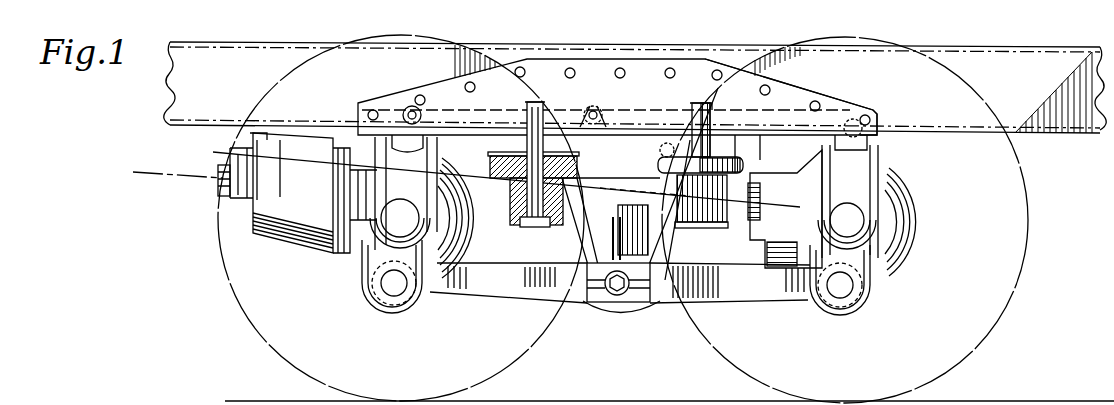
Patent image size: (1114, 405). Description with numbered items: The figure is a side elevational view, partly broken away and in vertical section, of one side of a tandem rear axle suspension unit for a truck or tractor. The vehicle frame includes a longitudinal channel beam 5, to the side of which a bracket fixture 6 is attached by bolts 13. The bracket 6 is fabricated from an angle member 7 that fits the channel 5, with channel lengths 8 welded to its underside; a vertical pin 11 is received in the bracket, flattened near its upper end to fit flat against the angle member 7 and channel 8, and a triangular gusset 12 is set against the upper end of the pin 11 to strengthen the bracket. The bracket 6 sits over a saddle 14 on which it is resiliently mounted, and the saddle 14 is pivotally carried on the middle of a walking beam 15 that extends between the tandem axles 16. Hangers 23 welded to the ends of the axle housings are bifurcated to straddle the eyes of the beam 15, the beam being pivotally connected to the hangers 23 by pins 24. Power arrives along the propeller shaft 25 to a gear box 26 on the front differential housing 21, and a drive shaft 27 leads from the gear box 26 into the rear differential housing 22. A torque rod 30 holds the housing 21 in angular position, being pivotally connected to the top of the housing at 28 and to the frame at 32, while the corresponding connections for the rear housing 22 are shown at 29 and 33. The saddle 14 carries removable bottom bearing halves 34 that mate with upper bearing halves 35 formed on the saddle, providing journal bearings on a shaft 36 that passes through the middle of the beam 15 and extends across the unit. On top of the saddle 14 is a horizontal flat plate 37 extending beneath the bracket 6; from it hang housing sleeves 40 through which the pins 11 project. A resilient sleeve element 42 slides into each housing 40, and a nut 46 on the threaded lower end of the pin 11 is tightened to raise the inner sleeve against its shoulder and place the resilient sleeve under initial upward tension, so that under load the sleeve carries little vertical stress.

The longitudinal channel beam 5 is at (1068, 50).
The bracket fixture 6 is at (641, 58).
The angle member 7 is at (806, 93).
The channel length 8 is at (757, 156).
The vertical pin 11 is at (544, 150).
The triangular gusset 12 is at (492, 168).
The bolt 13 is at (569, 67).
The saddle 14 is at (614, 216).
The walking beam 15 is at (676, 300).
The tandem axle 16 is at (420, 217).
The front differential housing 21 is at (520, 259).
The rear differential housing 22 is at (908, 188).
The hanger 23 is at (360, 255).
The pin 24 is at (372, 292).
The propeller shaft 25 is at (182, 178).
The gear box 26 is at (252, 226).
The drive shaft 27 is at (488, 158).
The pivotal connection 28 is at (412, 106).
The pivotal connection 29 is at (865, 114).
The torque rod 30 is at (485, 112).
The pivotal connection 32 is at (593, 108).
The pivotal connection 33 is at (665, 143).
The bottom bearing half 34 is at (640, 308).
The upper bearing half 35 is at (668, 270).
The shaft 36 is at (598, 306).
The horizontal flat plate 37 is at (655, 166).
The housing sleeve 40 is at (512, 199).
The resilient sleeve element 42 is at (516, 220).
The nut 46 is at (710, 232).